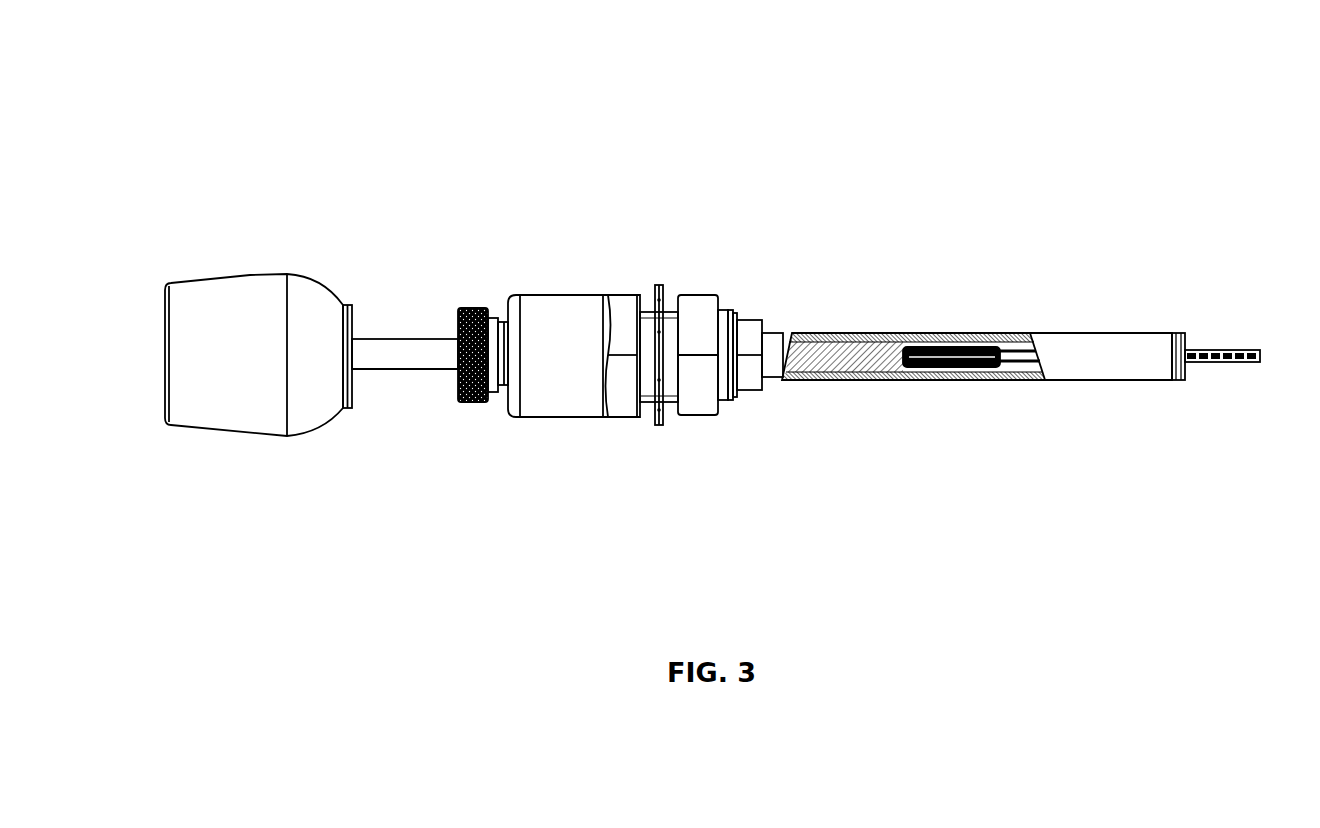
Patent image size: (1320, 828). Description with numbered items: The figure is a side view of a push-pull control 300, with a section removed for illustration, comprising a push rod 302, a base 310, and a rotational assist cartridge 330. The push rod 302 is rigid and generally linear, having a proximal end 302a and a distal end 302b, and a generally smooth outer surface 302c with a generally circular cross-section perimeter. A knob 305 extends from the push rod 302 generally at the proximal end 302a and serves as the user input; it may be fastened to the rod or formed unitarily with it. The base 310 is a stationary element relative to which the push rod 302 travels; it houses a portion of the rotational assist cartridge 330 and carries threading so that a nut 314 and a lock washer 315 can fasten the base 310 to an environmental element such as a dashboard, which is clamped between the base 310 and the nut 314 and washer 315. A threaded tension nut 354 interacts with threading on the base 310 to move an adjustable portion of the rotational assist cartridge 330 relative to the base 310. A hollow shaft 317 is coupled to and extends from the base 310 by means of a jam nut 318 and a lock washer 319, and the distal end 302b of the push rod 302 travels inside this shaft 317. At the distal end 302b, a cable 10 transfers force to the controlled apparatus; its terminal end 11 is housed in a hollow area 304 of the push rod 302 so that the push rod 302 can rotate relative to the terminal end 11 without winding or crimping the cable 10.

The push-pull control 300 is at (1002, 117).
The knob 305 is at (193, 322).
The push rod 302 is at (387, 318).
The proximal end 302a is at (362, 318).
The distal end 302b is at (1006, 372).
The outer surface 302c is at (372, 356).
The threaded tension nut 354 is at (462, 295).
The rotational assist cartridge 330 is at (480, 430).
The base 310 is at (560, 282).
The lock washer 315 is at (658, 420).
The nut 314 is at (700, 317).
The lock washer 319 is at (733, 313).
The jam nut 318 is at (751, 372).
The hollow shaft 317 is at (777, 335).
The hollow area 304 is at (900, 343).
The terminal end 11 is at (947, 343).
The cable 10 is at (1013, 342).